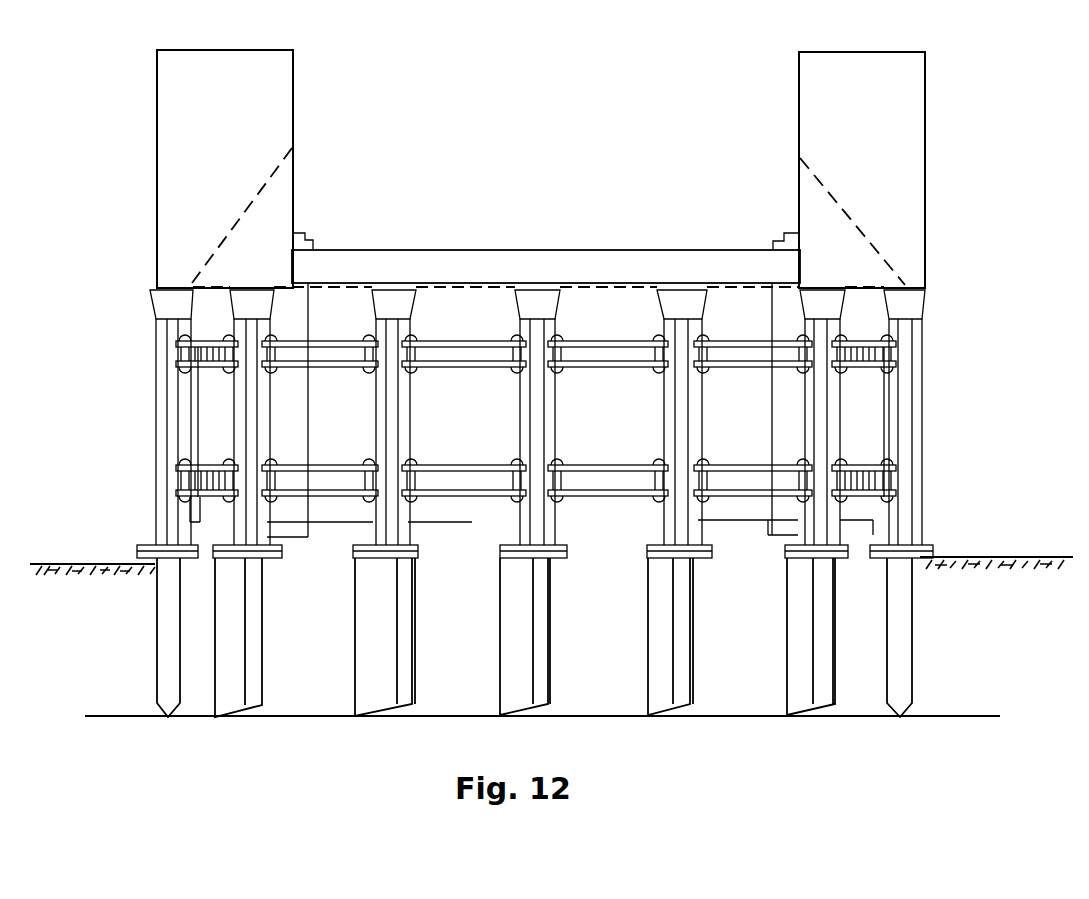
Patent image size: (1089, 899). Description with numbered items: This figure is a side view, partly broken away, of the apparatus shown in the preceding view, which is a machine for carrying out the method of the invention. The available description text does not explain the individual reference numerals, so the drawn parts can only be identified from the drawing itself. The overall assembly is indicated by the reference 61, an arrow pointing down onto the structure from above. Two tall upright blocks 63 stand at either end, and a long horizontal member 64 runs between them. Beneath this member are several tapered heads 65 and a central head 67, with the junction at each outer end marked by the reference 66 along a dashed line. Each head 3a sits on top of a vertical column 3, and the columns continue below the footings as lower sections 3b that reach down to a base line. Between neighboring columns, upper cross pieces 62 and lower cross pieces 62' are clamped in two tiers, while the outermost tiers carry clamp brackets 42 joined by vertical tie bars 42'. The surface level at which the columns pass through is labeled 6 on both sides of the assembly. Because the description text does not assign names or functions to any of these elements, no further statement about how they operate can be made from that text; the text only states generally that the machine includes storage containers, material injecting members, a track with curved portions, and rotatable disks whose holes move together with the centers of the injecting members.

The pier structure assembly 61 is at (489, 86).
The end support blocks 63 is at (283, 94).
The transverse beam 64 is at (328, 283).
The pile cap 65 is at (243, 289).
The hinge / junction dashed line 66 is at (185, 289).
The center pile cap 67 is at (535, 292).
The pile head 3a is at (162, 303).
The pile 3 is at (158, 447).
The lower pile section 3b is at (158, 628).
The clamp bracket 42 is at (498, 418).
The tie bar 42' is at (535, 422).
The upper cross brace 62 is at (537, 334).
The lower cross brace 62' is at (537, 466).
The ground surface 6 is at (995, 566).